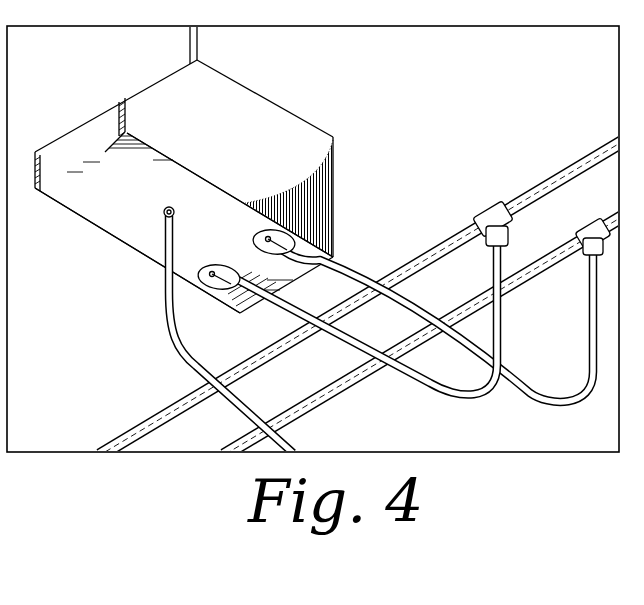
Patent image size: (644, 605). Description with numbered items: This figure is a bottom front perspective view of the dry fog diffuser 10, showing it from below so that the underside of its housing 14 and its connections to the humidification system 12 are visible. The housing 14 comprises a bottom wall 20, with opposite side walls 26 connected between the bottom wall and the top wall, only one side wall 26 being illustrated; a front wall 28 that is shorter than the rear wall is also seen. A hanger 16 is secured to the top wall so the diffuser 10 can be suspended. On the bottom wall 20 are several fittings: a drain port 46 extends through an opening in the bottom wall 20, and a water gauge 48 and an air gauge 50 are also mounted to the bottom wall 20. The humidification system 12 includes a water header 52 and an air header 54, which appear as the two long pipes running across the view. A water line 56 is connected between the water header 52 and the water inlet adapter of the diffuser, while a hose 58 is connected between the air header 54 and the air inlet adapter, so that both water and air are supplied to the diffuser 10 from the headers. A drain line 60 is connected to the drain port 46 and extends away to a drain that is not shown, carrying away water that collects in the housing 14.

The diffuser 10 is at (285, 96).
The humidification system 12 is at (362, 269).
The housing 14 is at (230, 97).
The hanger 16 is at (189, 37).
The bottom wall 20 is at (93, 200).
The side wall 26 is at (318, 134).
The front wall 28 is at (83, 131).
The drain port 46 is at (177, 213).
The water gauge 48 is at (327, 254).
The air gauge 50 is at (212, 289).
The water header 52 is at (565, 244).
The air header 54 is at (573, 165).
The water line 56 is at (577, 398).
The hose 58 is at (413, 385).
The drain line 60 is at (172, 336).